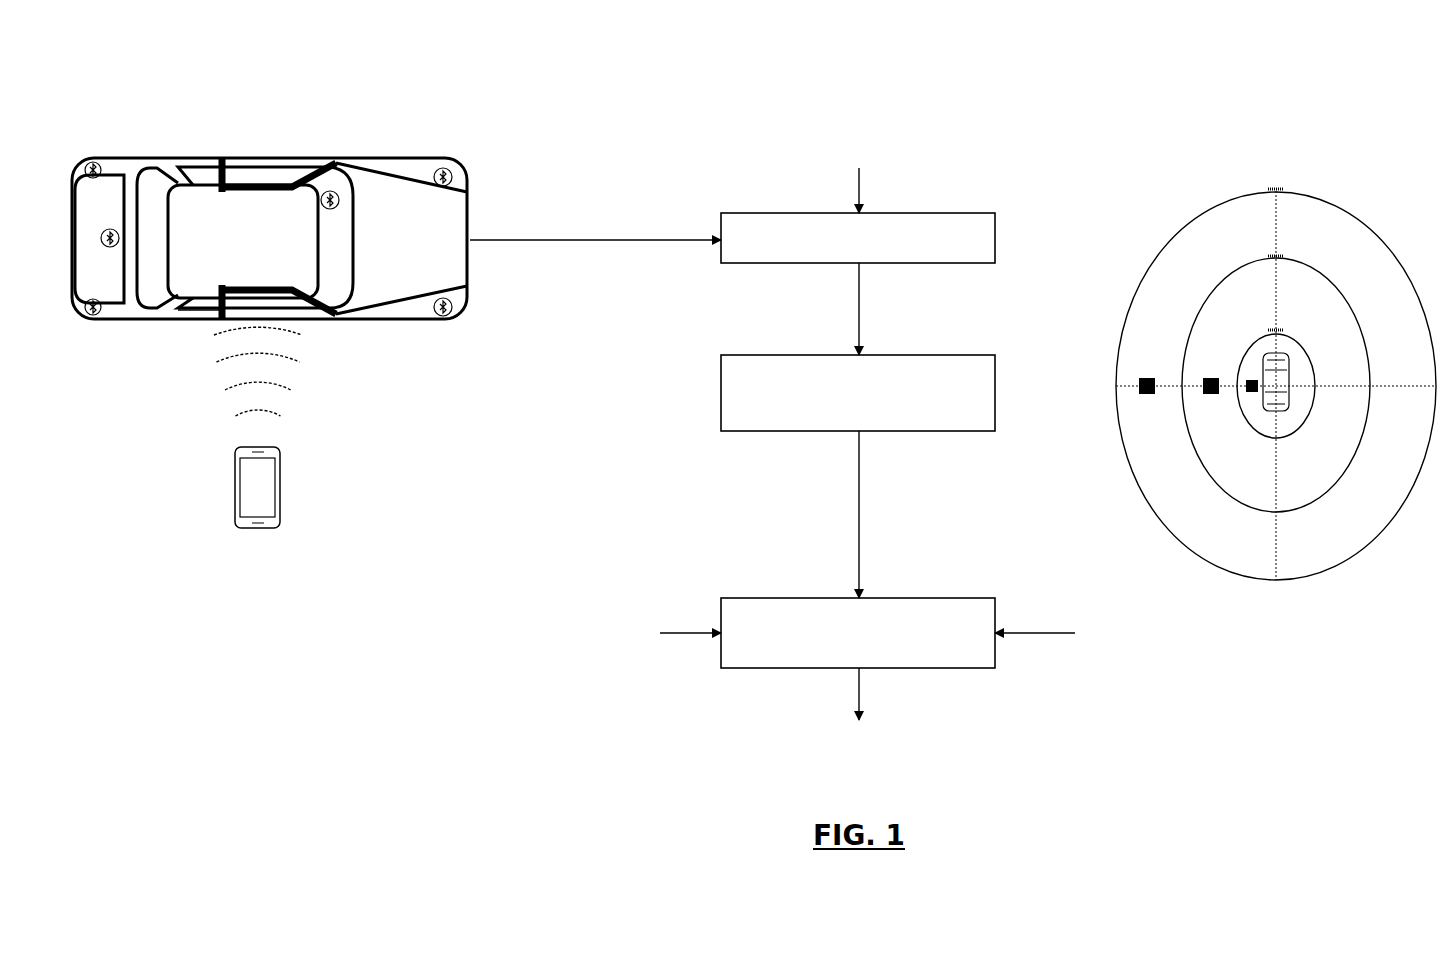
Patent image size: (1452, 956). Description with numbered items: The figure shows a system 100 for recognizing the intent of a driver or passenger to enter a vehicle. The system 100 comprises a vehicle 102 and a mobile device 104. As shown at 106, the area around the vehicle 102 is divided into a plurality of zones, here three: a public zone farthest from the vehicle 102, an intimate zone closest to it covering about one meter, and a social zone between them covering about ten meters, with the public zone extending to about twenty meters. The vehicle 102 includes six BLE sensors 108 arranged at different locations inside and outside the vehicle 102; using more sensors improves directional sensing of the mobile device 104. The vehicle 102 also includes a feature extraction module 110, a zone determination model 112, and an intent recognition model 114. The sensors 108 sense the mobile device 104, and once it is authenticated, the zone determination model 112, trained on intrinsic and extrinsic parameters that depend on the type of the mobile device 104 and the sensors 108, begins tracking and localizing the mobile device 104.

The system 100 is at (772, 374).
The vehicle 102 is at (269, 216).
The mobile device 104 is at (280, 486).
The zones around the vehicle 106 is at (1286, 155).
The BLE sensors 108 is at (337, 208).
The feature extraction module 110 is at (995, 242).
The zone determination model 112 is at (995, 403).
The intent recognition model 114 is at (960, 597).